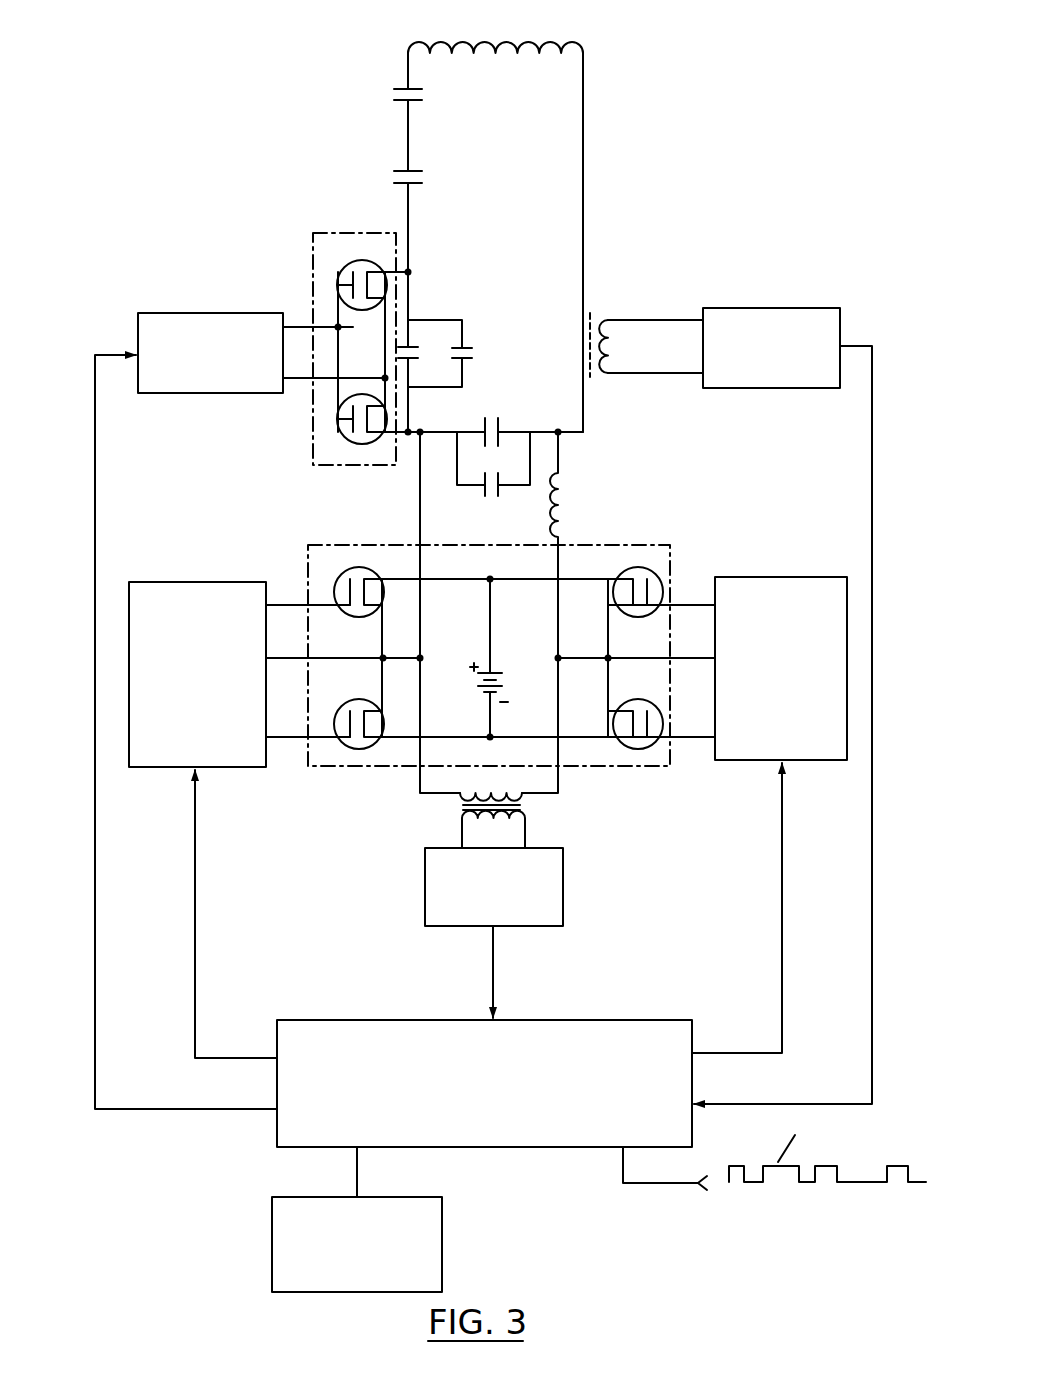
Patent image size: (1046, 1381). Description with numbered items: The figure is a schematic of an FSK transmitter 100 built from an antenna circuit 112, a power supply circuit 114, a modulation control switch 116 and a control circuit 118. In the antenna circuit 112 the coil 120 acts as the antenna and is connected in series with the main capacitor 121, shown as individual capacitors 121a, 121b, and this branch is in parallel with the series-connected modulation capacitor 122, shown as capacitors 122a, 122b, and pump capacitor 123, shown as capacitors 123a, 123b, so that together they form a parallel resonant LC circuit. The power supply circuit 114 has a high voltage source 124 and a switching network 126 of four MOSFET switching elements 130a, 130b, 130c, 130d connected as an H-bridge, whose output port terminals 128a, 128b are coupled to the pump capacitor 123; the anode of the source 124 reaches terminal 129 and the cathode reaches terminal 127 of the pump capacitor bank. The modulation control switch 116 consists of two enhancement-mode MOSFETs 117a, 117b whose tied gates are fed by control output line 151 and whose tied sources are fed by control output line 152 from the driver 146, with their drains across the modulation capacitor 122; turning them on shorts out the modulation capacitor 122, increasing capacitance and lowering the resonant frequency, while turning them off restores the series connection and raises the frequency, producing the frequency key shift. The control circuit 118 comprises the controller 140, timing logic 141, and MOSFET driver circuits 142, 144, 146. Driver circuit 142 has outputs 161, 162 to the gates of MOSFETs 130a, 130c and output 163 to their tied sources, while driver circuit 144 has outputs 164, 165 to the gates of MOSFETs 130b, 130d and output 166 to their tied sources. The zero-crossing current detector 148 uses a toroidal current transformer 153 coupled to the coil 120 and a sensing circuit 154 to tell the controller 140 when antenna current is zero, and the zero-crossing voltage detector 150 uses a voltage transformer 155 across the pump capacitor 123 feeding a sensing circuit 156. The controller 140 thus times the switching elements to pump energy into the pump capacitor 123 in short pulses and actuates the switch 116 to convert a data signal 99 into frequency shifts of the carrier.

The FSK transmitter 100 is at (778, 45).
The antenna circuit 112 is at (586, 38).
The power supply circuit 114 is at (502, 627).
The modulation control switch 116 is at (332, 324).
The first MOSFET transistor 117a is at (343, 265).
The second MOSFET transistor 117b is at (340, 422).
The control circuit 118 is at (150, 1124).
The coil 120 is at (485, 50).
The main capacitor 121 is at (406, 183).
The capacitor 121a is at (412, 90).
The capacitor 121b is at (412, 170).
The modulation capacitor 122 is at (466, 352).
The capacitor 122a is at (413, 358).
The capacitor 122b is at (467, 350).
The pump capacitor 123 is at (524, 457).
The capacitor 123a is at (502, 438).
The capacitor 123b is at (482, 490).
The high voltage source 124 is at (504, 667).
The switching network 126 is at (455, 601).
The terminal 127 is at (561, 431).
The terminal 128a is at (423, 660).
The terminal 128b is at (556, 662).
The terminal 129 is at (417, 438).
The switching element 130a is at (362, 567).
The switching element 130b is at (655, 567).
The switching element 130c is at (360, 752).
The switching element 130d is at (633, 752).
The controller 140 is at (325, 1020).
The timing logic 141 is at (300, 1197).
The MOSFET driver circuit 142 is at (184, 582).
The MOSFET driver circuit 144 is at (770, 577).
The MOSFET driver 146 is at (178, 312).
The zero-crossing current detector 148 is at (715, 304).
The zero-crossing voltage detector 150 is at (465, 859).
The control output line 151 is at (300, 326).
The control output line 152 is at (300, 380).
The toroidal current transformer 153 is at (594, 316).
The sensing circuit 154 is at (775, 308).
The voltage transformer 155 is at (445, 813).
The zero-crossing voltage sensing circuit 156 is at (546, 850).
The output 161 is at (283, 605).
The output 162 is at (287, 742).
The output 163 is at (313, 661).
The output 164 is at (688, 602).
The output 165 is at (687, 738).
The output 166 is at (631, 660).
The data signal 99 is at (756, 1184).